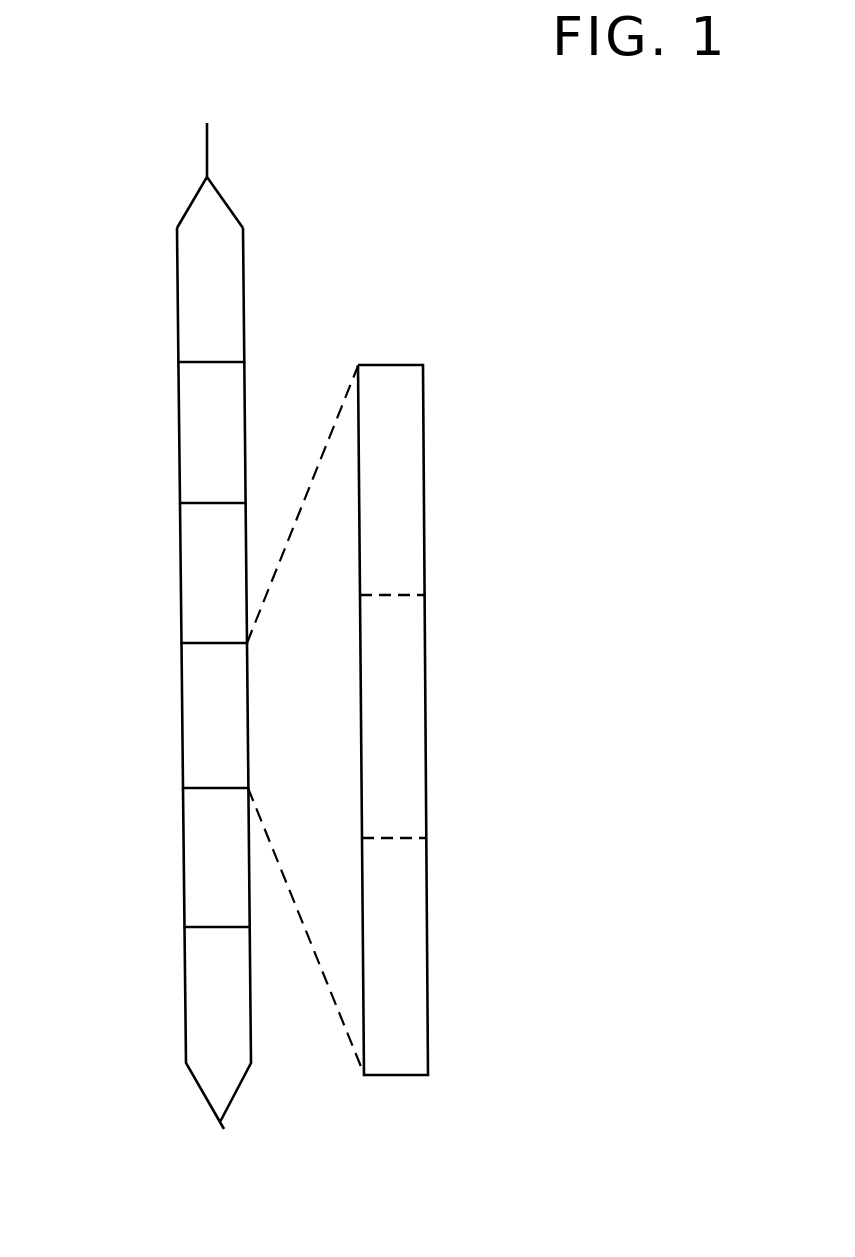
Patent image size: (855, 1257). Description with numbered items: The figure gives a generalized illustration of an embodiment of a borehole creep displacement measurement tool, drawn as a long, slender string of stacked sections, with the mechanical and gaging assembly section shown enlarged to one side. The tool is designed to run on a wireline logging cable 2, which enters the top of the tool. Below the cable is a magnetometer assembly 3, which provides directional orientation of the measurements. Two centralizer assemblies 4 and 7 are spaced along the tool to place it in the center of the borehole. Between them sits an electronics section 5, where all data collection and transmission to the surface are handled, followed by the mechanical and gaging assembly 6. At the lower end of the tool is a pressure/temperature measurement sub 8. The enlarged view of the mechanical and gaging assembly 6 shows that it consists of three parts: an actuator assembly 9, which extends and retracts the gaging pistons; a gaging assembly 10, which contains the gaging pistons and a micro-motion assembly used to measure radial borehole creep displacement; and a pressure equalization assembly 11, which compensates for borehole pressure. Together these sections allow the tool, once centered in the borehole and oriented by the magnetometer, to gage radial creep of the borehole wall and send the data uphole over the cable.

The wireline logging cable 2 is at (207, 157).
The magnetometer assembly 3 is at (205, 294).
The centralizer assembly 4 is at (210, 437).
The electronics section 5 is at (212, 585).
The mechanical and gaging assembly 6 is at (212, 722).
The centralizer assembly 7 is at (217, 866).
The pressure/temperature measurement sub 8 is at (215, 990).
The actuator assembly 9 is at (390, 497).
The gaging assembly 10 is at (392, 698).
The pressure equalization assembly 11 is at (400, 995).